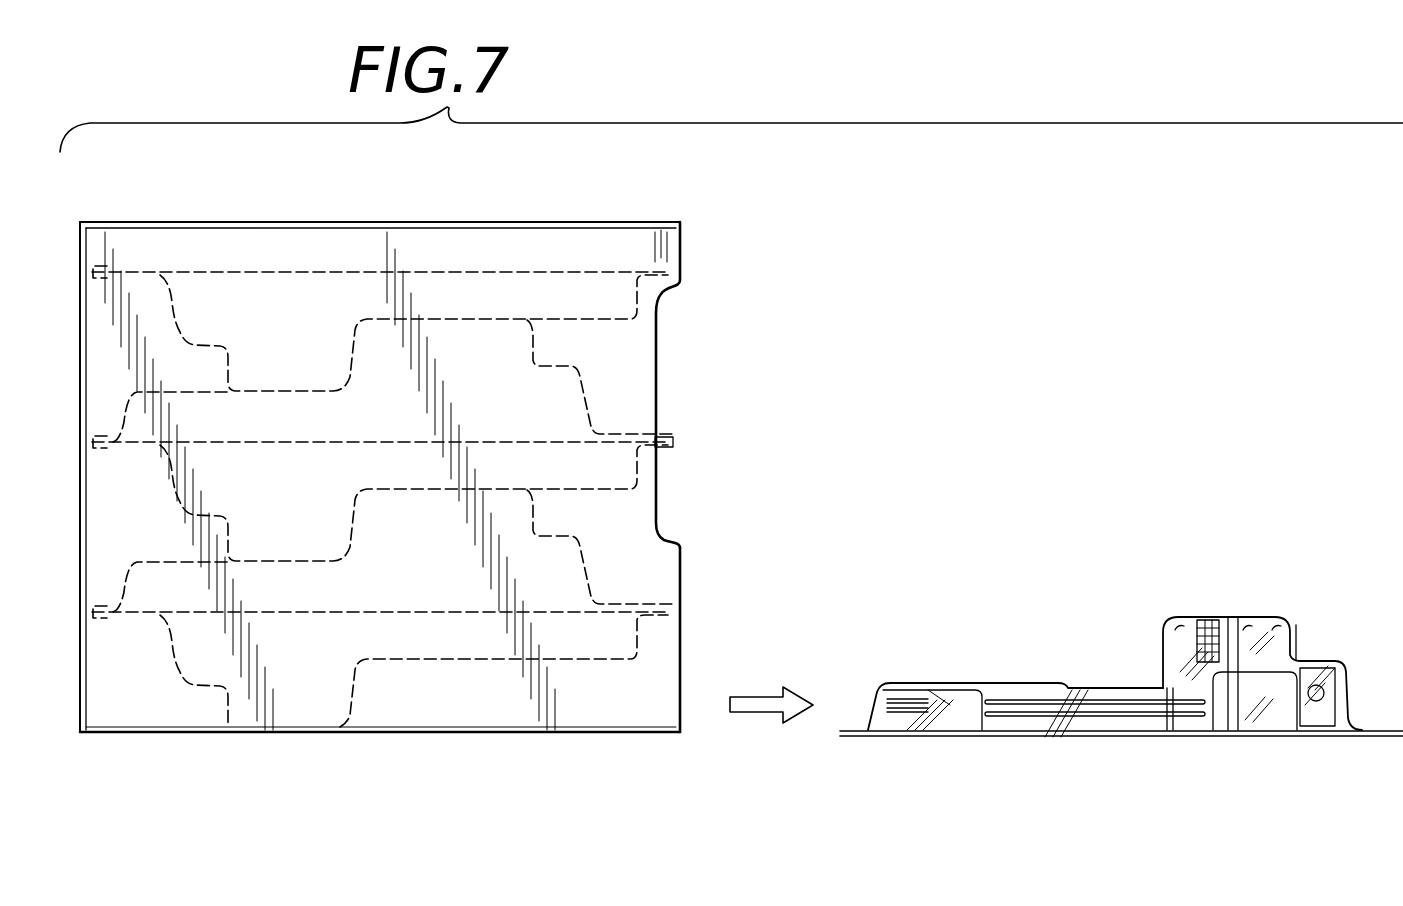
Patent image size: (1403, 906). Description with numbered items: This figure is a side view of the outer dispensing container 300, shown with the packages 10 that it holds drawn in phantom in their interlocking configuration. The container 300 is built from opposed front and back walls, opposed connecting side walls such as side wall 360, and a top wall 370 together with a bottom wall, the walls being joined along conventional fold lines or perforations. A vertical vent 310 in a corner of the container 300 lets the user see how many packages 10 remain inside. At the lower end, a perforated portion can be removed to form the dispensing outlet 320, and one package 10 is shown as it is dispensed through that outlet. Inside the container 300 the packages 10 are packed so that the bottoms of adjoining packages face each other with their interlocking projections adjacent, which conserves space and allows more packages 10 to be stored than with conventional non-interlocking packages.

The package 10 is at (380, 598).
The outer dispensing container 300 is at (697, 218).
The vertical vent 310 is at (658, 521).
The dispensing outlet 320 is at (680, 698).
The side wall 360 is at (133, 703).
The top wall 370 is at (312, 222).